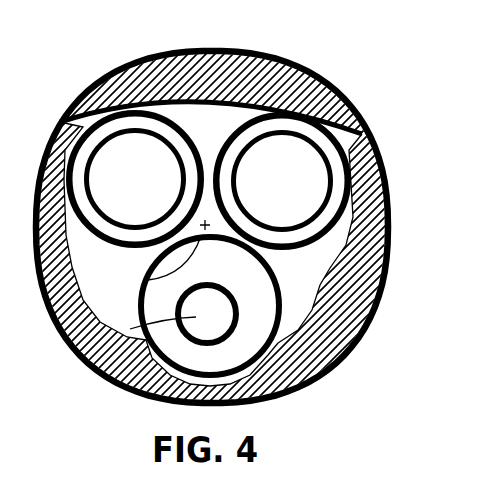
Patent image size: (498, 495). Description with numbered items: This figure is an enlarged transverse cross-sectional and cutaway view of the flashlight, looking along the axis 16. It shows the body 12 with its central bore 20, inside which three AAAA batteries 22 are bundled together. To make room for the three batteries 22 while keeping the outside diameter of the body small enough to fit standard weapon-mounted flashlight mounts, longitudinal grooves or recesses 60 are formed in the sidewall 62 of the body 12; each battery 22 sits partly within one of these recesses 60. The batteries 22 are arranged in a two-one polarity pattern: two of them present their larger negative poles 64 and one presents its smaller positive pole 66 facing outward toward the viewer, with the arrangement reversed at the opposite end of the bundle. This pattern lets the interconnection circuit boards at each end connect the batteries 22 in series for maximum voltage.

The body 12 is at (281, 62).
The axis 16 is at (146, 279).
The bore 20 is at (190, 108).
The batteries 22 is at (253, 322).
The longitudinal grooves or recesses 60 is at (75, 112).
The sidewall 62 is at (387, 264).
The negative poles 64 is at (130, 195).
The positive poles 66 is at (103, 366).